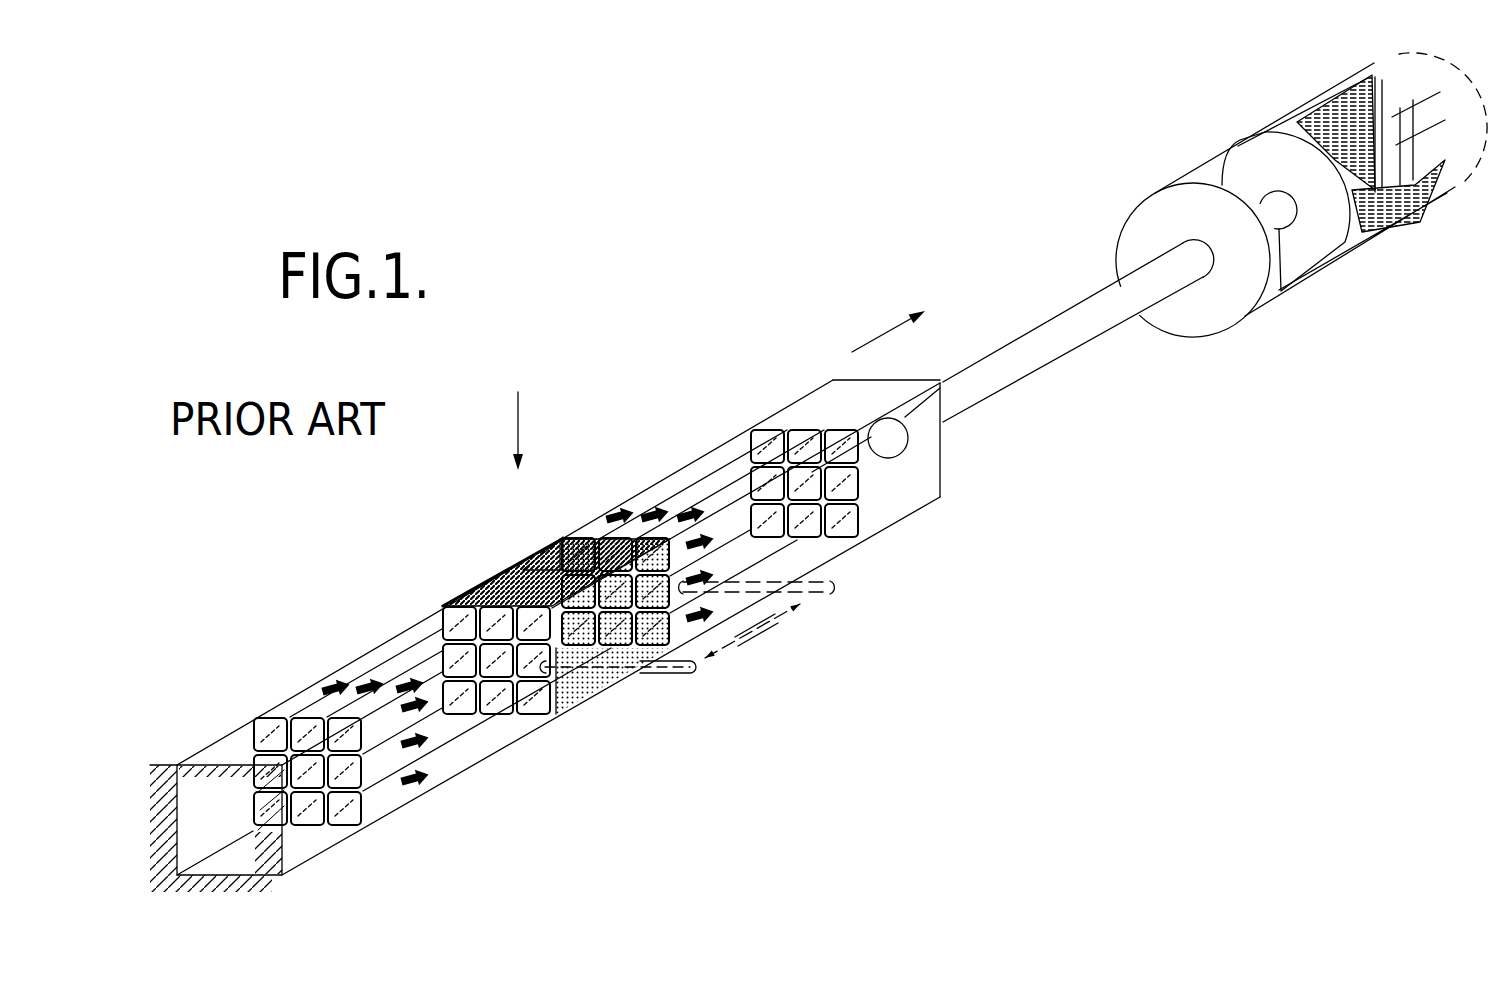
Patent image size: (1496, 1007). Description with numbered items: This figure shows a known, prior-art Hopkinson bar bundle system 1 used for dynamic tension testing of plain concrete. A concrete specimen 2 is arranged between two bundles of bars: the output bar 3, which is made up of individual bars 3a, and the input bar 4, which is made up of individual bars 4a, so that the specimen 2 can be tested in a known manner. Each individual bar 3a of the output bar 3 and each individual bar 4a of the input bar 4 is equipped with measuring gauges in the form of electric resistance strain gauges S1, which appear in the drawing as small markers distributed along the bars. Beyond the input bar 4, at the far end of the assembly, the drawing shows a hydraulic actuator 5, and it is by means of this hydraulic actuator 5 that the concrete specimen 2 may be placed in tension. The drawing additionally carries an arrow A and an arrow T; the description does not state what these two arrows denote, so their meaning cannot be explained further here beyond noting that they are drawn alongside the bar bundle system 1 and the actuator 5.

The Hopkinson bar bundle system 1 is at (506, 534).
The concrete specimen 2 is at (601, 706).
The output bar 3 is at (384, 826).
The bar of the output bar 3a is at (400, 642).
The input bar 4 is at (848, 562).
The bar of the input bar 4a is at (653, 498).
The hydraulic actuator 5 is at (1237, 148).
The electric resistance strain gauges S1 is at (417, 778).
The direction A is at (517, 403).
The pull direction T is at (901, 311).